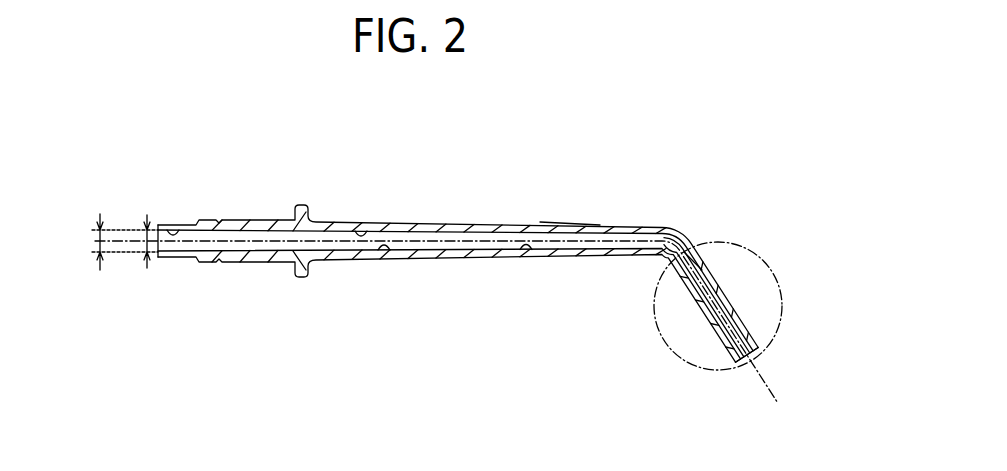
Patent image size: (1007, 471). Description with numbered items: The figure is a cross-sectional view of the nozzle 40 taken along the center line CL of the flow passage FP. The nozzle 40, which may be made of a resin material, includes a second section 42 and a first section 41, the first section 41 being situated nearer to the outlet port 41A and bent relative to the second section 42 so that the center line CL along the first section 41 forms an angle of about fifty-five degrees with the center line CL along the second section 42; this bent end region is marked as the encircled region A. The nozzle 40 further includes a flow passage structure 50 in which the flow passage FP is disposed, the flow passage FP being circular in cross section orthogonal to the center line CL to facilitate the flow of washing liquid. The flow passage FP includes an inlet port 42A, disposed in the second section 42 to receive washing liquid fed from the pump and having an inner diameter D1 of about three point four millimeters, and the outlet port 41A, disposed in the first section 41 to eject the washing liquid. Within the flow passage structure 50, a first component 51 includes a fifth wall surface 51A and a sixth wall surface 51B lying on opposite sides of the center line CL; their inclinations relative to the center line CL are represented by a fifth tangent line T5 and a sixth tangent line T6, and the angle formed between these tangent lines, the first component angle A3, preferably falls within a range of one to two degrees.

The nozzle 40 is at (662, 173).
The second section 42 is at (408, 222).
The inlet port 42A is at (173, 228).
The first component 51 is at (453, 253).
The fifth wall surface 51A is at (361, 231).
The sixth wall surface 51B is at (385, 252).
The flow passage FP is at (524, 251).
The flow passage structure 50 is at (570, 230).
The first section 41 is at (712, 275).
The outlet port 41A is at (749, 360).
The enlarged region A is at (726, 243).
The center line CL is at (780, 388).
The first component angle A3 is at (109, 242).
The inner diameter D1 is at (141, 256).
The fifth tangent line T5 is at (118, 228).
The sixth tangent line T6 is at (120, 256).